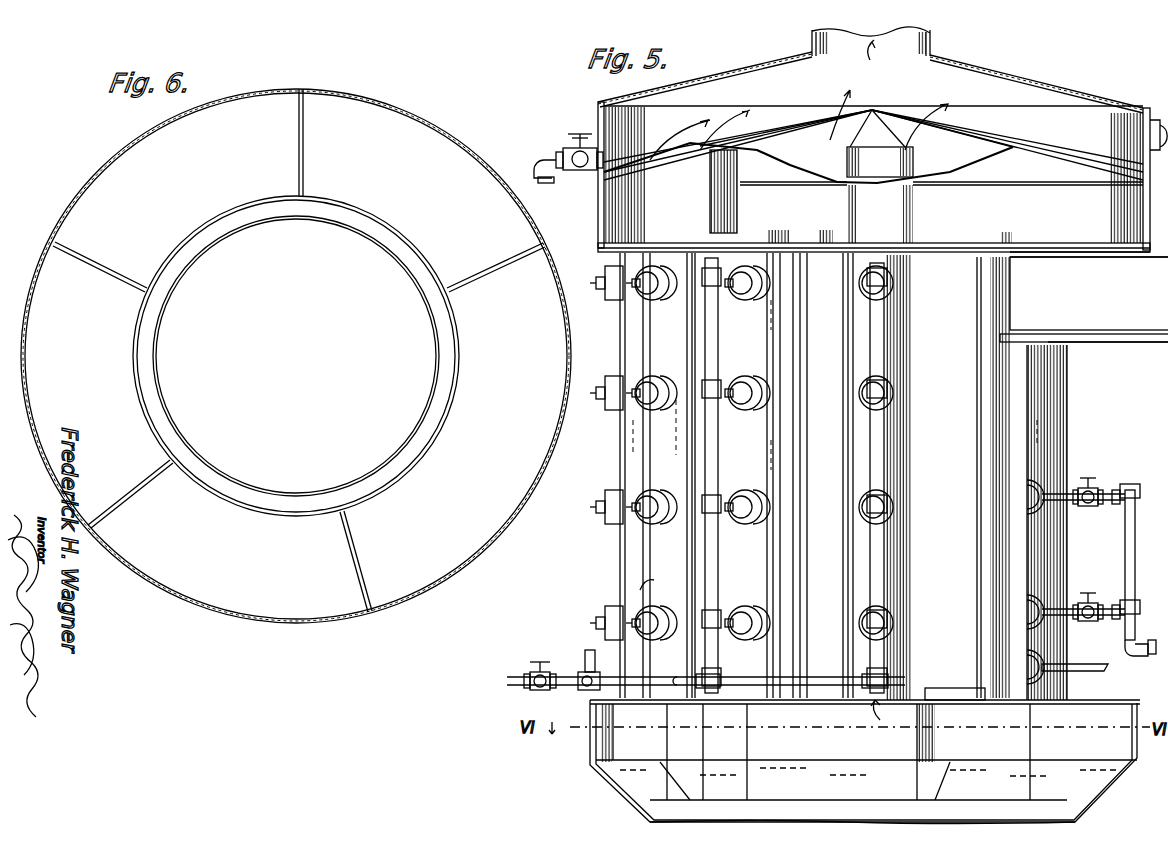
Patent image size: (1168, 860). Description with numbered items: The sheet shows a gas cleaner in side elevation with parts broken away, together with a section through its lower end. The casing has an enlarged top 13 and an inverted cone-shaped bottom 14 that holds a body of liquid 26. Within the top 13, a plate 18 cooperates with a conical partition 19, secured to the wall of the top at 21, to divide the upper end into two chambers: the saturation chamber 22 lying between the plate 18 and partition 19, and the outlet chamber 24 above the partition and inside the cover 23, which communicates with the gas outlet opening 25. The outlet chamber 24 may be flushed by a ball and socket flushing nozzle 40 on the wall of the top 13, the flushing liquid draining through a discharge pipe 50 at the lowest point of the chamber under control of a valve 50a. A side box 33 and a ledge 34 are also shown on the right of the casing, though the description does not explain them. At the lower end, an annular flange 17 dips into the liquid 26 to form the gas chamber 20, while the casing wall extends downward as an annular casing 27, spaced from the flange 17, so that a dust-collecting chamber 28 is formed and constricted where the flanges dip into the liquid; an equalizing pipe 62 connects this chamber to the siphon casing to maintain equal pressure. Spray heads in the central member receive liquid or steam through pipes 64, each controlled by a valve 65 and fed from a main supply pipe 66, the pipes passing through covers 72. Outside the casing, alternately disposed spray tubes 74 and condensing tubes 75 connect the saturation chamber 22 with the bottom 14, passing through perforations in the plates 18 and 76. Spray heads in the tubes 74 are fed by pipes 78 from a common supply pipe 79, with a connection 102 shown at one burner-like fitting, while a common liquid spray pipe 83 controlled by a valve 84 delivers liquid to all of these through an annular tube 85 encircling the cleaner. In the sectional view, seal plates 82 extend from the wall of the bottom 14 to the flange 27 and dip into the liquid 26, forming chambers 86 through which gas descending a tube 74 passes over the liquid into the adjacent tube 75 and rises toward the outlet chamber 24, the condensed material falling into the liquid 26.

In FIG. 5, the enlarged top 13 is at (1140, 206).
In FIG. 6, the inverted cone-shaped bottom 14 is at (543, 466).
In FIG. 5, the inverted cone-shaped bottom 14 is at (610, 781).
In FIG. 6, the annular flange 17 is at (348, 222).
In FIG. 5, the plate 18 is at (1100, 248).
In FIG. 5, the conical partition 19 is at (980, 141).
In FIG. 6, the gas chamber 20 is at (331, 431).
In FIG. 5, the gas chamber 20 is at (851, 725).
In FIG. 5, the securing point 21 is at (1033, 187).
In FIG. 5, the saturation chamber 22 is at (808, 163).
In FIG. 5, the cover 23 is at (1062, 90).
In FIG. 5, the outlet chamber 24 is at (799, 110).
In FIG. 5, the gas outlet opening 25 is at (935, 42).
In FIG. 5, the liquid 26 is at (726, 760).
In FIG. 6, the annular casing 27 is at (456, 394).
In FIG. 6, the dust-collecting chamber 28 is at (285, 508).
In FIG. 5, the dust-collecting chamber 28 is at (590, 742).
In FIG. 5, the side box 33 is at (1089, 293).
In FIG. 5, the ledge 34 is at (1104, 340).
In FIG. 5, the ball and socket flushing nozzle 40 is at (1140, 137).
In FIG. 5, the discharge pipe 50 is at (546, 178).
In FIG. 5, the control valve 50a is at (577, 140).
In FIG. 5, the equalizing pipe 62 is at (1086, 665).
In FIG. 5, the pipes 64 is at (1066, 502).
In FIG. 5, the valve 65 is at (1090, 478).
In FIG. 5, the main supply pipe 66 is at (1136, 580).
In FIG. 5, the cover plates 72 is at (943, 548).
In FIG. 5, the spray tubes 74 is at (626, 331).
In FIG. 5, the condensing tubes 75 is at (850, 158).
In FIG. 5, the plate 76 is at (938, 700).
In FIG. 5, the pipes 78 is at (606, 276).
In FIG. 5, the common supply pipe 79 is at (716, 444).
In FIG. 6, the seal plates 82 is at (305, 160).
In FIG. 5, the seal plates 82 is at (920, 740).
In FIG. 5, the common liquid spray pipe 83 is at (592, 680).
In FIG. 5, the valve 84 is at (530, 668).
In FIG. 5, the annular tube 85 is at (802, 676).
In FIG. 6, the chambers 86 is at (249, 277).
In FIG. 5, the burner connection 102 is at (660, 585).